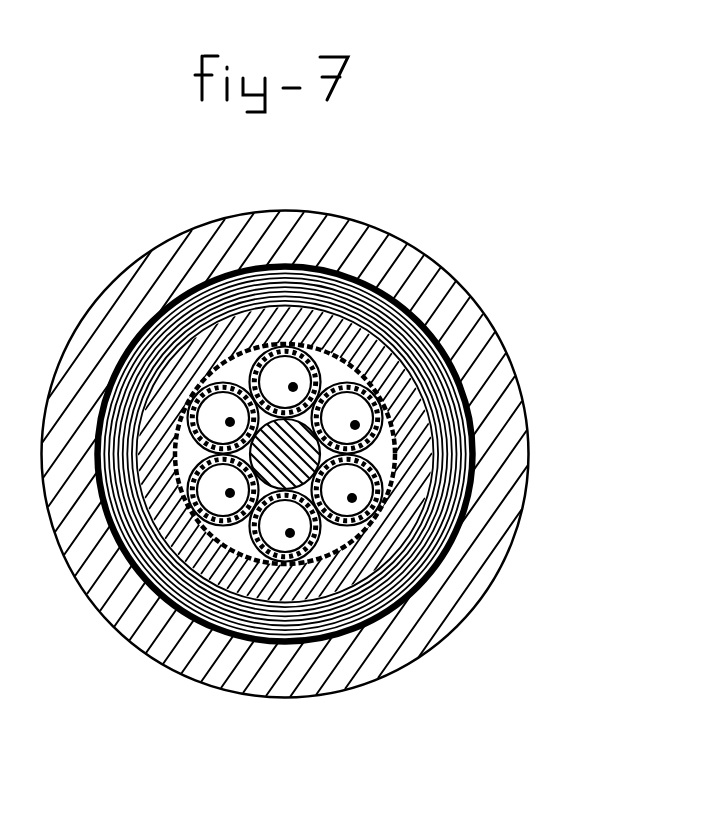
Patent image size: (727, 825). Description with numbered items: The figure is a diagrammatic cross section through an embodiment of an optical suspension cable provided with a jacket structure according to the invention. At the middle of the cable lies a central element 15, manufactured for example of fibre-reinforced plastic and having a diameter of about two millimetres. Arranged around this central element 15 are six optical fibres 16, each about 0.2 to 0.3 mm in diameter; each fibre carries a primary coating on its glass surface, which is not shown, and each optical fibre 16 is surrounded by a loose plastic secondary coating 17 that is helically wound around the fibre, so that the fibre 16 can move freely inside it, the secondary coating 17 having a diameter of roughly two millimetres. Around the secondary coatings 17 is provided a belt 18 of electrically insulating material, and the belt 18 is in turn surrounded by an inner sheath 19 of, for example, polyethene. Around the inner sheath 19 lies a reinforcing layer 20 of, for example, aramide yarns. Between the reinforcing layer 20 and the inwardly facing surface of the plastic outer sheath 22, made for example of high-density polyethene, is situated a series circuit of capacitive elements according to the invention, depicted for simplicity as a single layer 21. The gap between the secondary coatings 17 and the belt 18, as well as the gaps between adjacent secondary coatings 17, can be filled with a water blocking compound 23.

The central element 15 is at (397, 297).
The optical fibre 16 is at (355, 425).
The secondary coating 17 is at (383, 430).
The belt 18 is at (398, 483).
The inner sheath 19 is at (413, 508).
The reinforcing layer 20 is at (443, 530).
The layer of capacitive elements 21 is at (440, 573).
The outer sheath 22 is at (463, 603).
The water blocking compound 23 is at (330, 540).